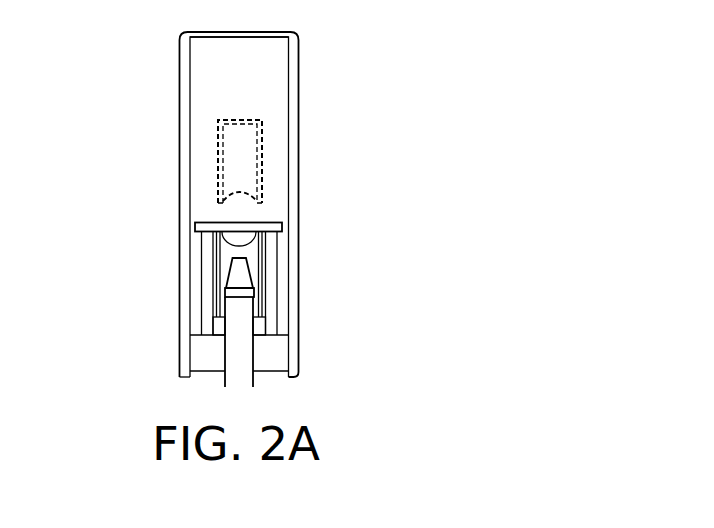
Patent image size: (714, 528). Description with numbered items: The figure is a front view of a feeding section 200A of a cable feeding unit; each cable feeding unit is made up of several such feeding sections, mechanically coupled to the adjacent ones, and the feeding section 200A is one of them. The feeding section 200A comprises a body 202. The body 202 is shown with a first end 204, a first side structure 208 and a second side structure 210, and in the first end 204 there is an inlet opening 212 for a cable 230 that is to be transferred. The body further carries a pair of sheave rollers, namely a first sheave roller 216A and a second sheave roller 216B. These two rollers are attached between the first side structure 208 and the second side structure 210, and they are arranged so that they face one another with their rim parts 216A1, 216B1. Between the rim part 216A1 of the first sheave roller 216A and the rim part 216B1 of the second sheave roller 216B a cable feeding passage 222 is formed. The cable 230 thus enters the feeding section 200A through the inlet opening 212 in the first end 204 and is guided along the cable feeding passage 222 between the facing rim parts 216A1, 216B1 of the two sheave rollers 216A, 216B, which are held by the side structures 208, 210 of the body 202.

The feeding section 200A is at (478, 221).
The body 202 is at (183, 204).
The first end 204 is at (208, 195).
The first side structure 208 is at (173, 207).
The second side structure 210 is at (297, 204).
The inlet opening 212 is at (167, 283).
The first sheave roller 216A is at (330, 281).
The rim part 216A1 is at (314, 244).
The second sheave roller 216B is at (325, 161).
The rim part 216B1 is at (328, 214).
The cable feeding passage 222 is at (163, 240).
The cable 230 is at (161, 342).